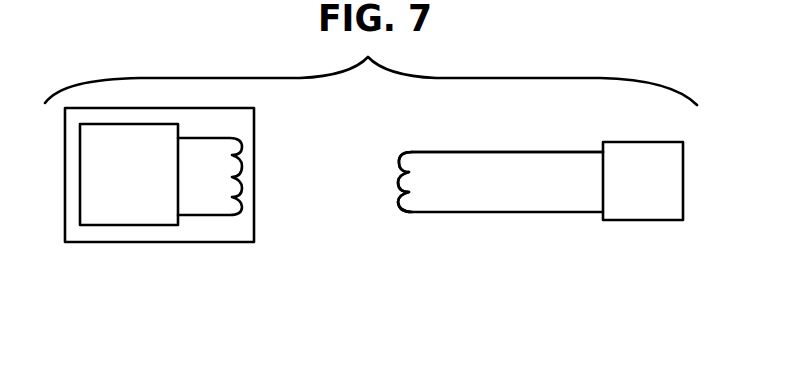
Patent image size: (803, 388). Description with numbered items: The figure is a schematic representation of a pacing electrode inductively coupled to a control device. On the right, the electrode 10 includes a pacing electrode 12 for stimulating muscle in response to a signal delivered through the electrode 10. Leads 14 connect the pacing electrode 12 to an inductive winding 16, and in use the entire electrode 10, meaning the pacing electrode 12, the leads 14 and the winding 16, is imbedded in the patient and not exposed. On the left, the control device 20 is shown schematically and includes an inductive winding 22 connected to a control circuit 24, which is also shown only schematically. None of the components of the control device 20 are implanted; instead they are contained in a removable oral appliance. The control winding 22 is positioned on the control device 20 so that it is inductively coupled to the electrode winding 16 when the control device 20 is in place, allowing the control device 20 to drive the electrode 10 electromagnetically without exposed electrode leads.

The electrode 10 is at (527, 228).
The pacing electrode 12 is at (640, 221).
The leads 14 is at (522, 152).
The inductive winding 16 is at (402, 173).
The control device 20 is at (187, 247).
The inductive winding 22 is at (235, 199).
The control circuit 24 is at (122, 225).